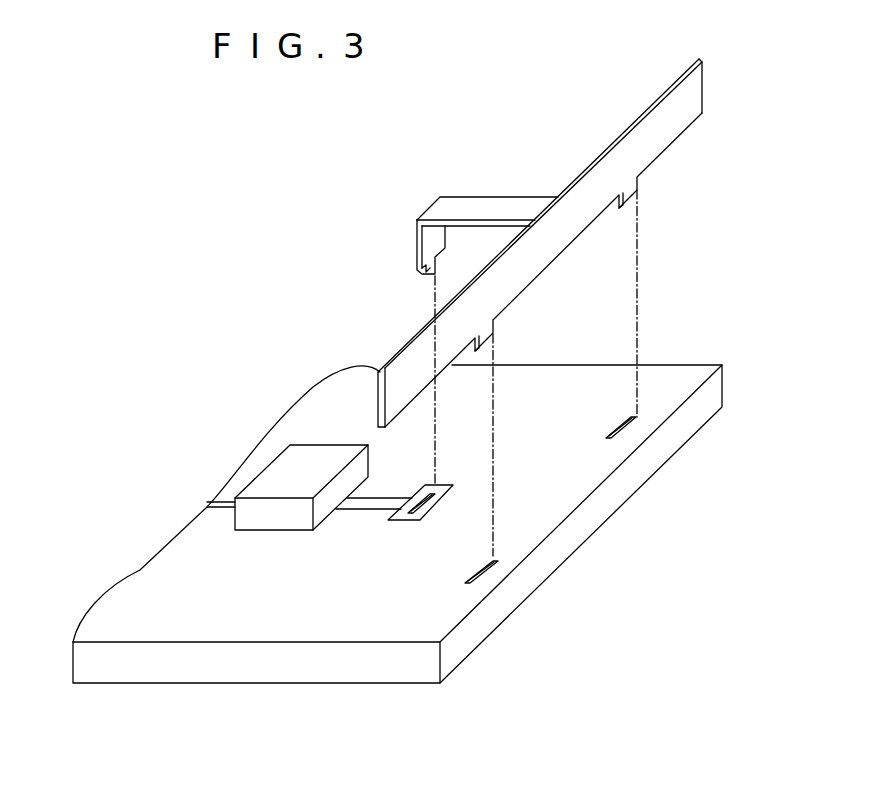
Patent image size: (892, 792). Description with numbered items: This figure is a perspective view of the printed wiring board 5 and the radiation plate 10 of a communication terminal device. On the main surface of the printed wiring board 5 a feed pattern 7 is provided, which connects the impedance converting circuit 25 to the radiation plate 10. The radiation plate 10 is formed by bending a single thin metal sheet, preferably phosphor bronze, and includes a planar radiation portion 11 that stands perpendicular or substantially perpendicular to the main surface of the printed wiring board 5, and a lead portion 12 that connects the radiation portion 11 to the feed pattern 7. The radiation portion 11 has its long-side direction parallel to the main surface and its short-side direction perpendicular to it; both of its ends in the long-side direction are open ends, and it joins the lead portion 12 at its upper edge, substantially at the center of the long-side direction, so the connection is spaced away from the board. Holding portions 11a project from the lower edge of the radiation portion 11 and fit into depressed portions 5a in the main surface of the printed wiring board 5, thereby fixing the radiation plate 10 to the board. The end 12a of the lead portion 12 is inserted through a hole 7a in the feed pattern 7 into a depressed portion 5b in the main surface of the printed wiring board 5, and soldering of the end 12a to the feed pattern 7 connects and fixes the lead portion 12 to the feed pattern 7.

The printed wiring board 5 is at (683, 368).
The depressed portions 5a is at (468, 572).
The depressed portion 5b is at (428, 509).
The feed pattern 7 is at (362, 510).
The hole 7a is at (420, 497).
The radiation plate 10 is at (602, 142).
The radiation portion 11 is at (697, 91).
The holding portions 11a is at (637, 185).
The lead portion 12 is at (493, 211).
The end 12a is at (427, 273).
The impedance converting circuit 25 is at (283, 465).